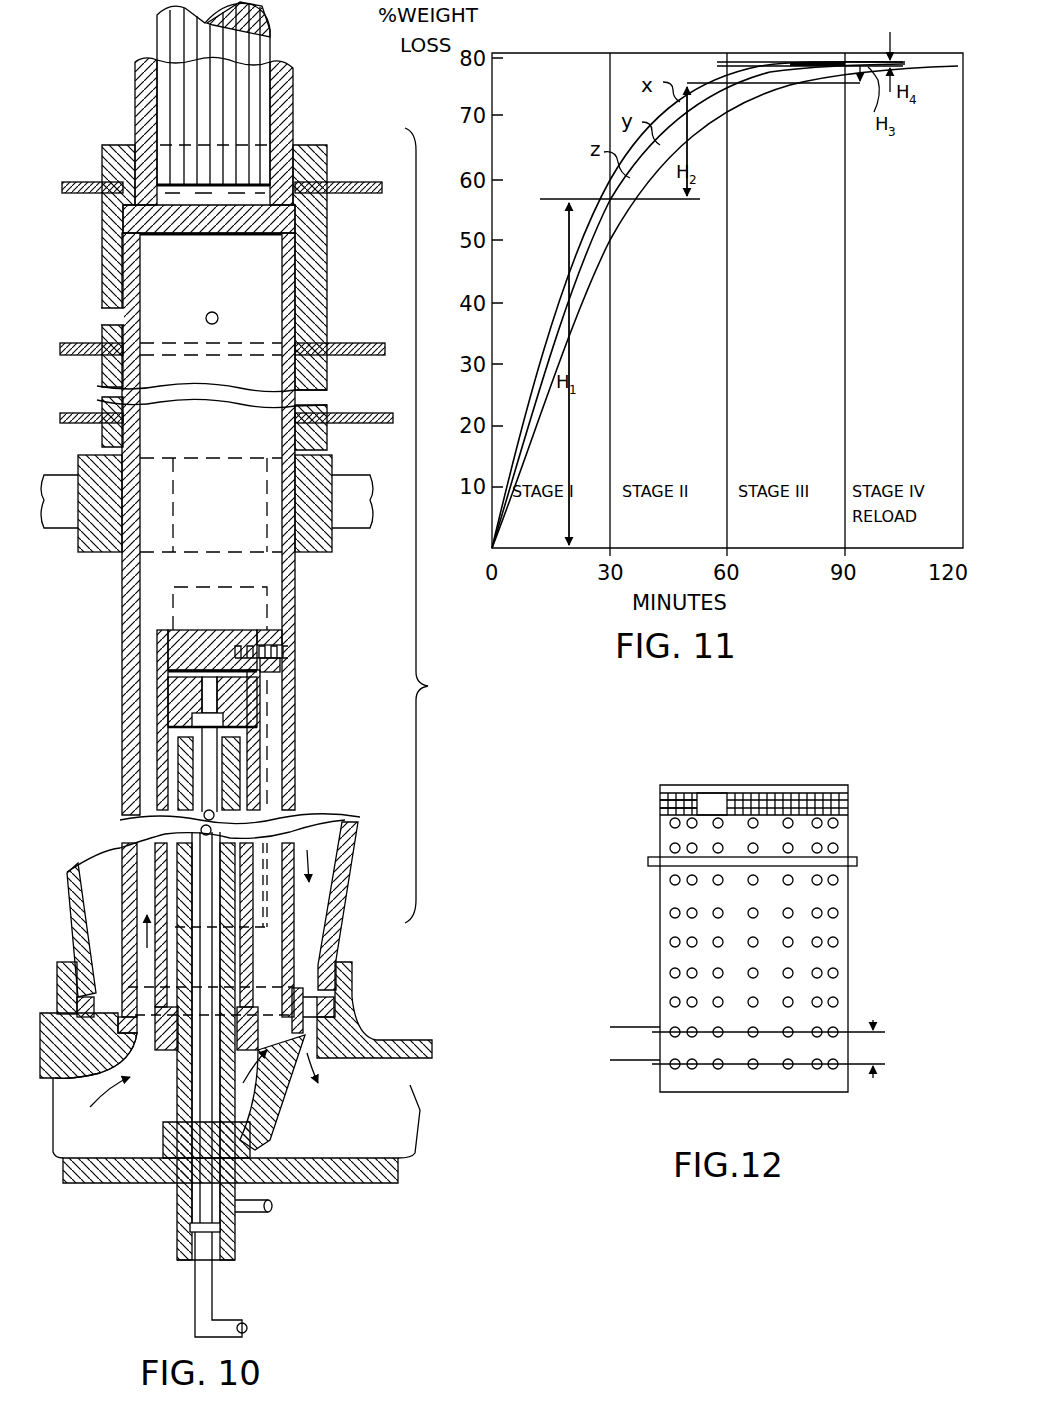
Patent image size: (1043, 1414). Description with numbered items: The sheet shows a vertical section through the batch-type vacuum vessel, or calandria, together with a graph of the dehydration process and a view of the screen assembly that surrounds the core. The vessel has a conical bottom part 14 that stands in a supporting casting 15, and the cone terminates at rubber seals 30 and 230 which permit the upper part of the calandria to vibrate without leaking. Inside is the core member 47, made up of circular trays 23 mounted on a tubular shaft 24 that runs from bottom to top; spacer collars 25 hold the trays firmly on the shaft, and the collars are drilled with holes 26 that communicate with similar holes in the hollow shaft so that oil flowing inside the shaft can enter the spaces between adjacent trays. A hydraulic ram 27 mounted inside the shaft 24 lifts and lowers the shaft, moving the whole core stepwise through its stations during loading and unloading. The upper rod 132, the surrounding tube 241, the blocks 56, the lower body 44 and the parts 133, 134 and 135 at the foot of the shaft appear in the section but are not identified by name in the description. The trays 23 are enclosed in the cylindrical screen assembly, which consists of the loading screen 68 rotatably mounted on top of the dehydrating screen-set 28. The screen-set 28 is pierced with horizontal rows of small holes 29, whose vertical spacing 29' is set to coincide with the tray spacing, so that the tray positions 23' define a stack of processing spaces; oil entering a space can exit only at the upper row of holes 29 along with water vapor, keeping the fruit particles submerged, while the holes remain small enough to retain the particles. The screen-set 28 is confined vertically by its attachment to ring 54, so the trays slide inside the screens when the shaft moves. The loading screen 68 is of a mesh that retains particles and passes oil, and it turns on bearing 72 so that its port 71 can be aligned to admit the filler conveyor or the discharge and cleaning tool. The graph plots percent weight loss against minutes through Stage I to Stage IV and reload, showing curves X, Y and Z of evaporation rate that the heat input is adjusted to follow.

In FIG. 10, the feed rod 132 is at (272, 34).
In FIG. 10, the upper tube 241 is at (135, 92).
In FIG. 10, the circular trays 23 is at (223, 286).
In FIG. 10, the spacer collars 25 is at (102, 268).
In FIG. 10, the tubular shaft 24 is at (186, 298).
In FIG. 10, the holes 26 is at (102, 320).
In FIG. 10, the block 56 is at (70, 530).
In FIG. 10, the hydraulic ram 27 is at (210, 630).
In FIG. 10, the core member 47 is at (442, 525).
In FIG. 10, the conical bottom part 14 is at (350, 867).
In FIG. 10, the rubber seal 230 is at (60, 980).
In FIG. 10, the supporting casting 15 is at (352, 1002).
In FIG. 10, the rubber seal 30 is at (132, 1037).
In FIG. 10, the body 44 is at (410, 1114).
In FIG. 10, the fitting 133 is at (177, 1216).
In FIG. 10, the pipe 134 is at (274, 1208).
In FIG. 10, the drain 135 is at (247, 1326).
In FIG. 12, the dehydrating screen-set 28 is at (848, 960).
In FIG. 12, the loading screen 68 is at (848, 808).
In FIG. 12, the port 71 is at (712, 800).
In FIG. 12, the bearing 72 is at (667, 812).
In FIG. 12, the ring 54 is at (860, 862).
In FIG. 12, the horizontal rows of small holes 29 is at (778, 1011).
In FIG. 12, the vertical spacing 29' is at (775, 1059).
In FIG. 12, the tray positions 23' is at (621, 1028).